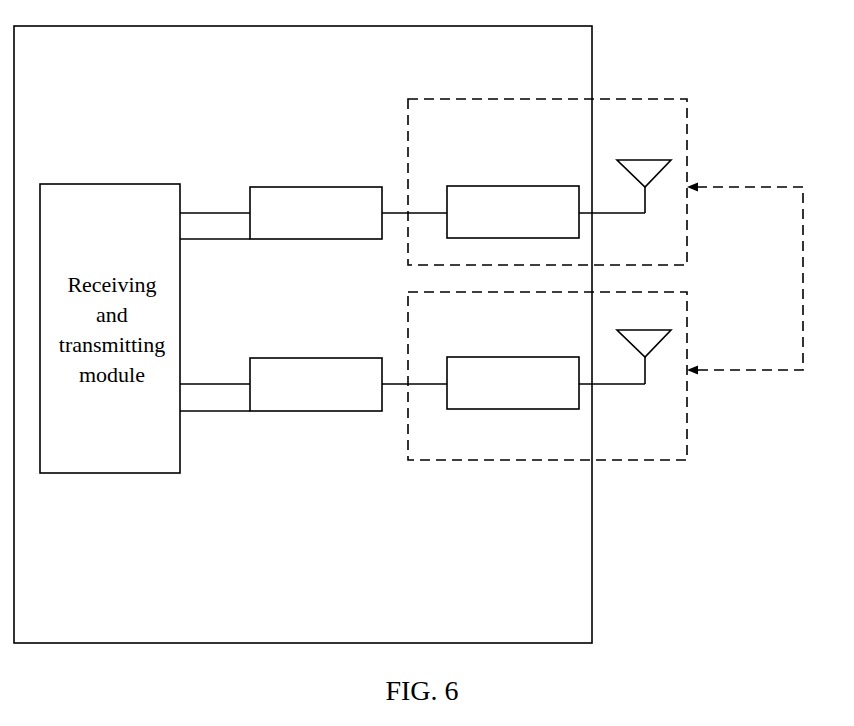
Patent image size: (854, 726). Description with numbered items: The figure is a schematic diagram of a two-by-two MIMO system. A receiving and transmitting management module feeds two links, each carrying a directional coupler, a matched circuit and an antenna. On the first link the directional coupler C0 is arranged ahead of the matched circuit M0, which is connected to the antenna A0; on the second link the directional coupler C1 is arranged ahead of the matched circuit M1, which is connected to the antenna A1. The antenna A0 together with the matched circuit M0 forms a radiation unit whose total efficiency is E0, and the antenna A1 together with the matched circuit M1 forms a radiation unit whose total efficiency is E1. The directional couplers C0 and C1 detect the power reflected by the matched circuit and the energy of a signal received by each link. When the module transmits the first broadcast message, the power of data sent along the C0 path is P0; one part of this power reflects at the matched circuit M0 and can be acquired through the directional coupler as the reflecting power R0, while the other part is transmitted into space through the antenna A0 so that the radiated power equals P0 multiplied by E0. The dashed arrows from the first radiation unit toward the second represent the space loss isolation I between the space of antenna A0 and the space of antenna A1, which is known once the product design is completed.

The transmitted power P0 is at (215, 198).
The reflecting power R0 is at (215, 259).
The directional coupler C0 is at (316, 193).
The directional coupler C1 is at (316, 365).
The matched circuit M0 is at (513, 193).
The matched circuit M1 is at (513, 363).
The antenna A0 is at (644, 168).
The antenna A1 is at (644, 338).
The total efficiency E0 is at (547, 161).
The total efficiency E1 is at (547, 401).
The space loss isolation I is at (760, 279).